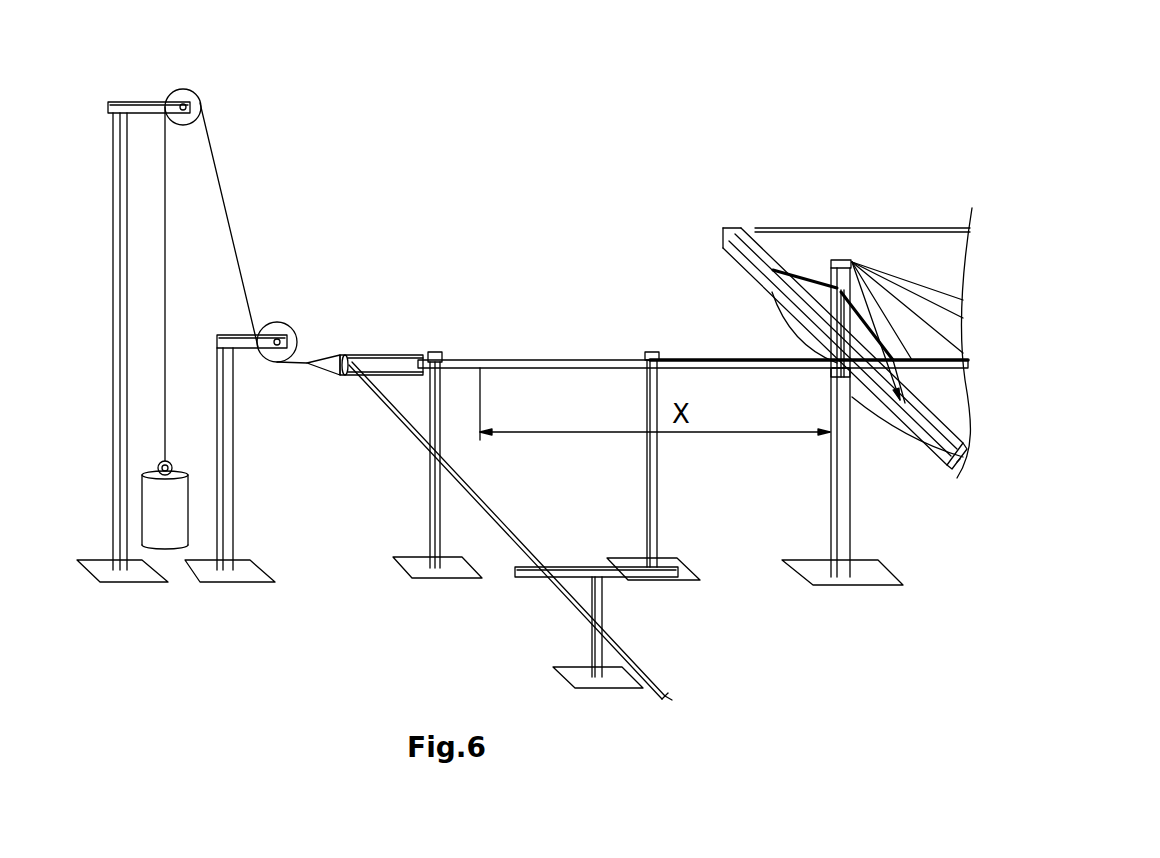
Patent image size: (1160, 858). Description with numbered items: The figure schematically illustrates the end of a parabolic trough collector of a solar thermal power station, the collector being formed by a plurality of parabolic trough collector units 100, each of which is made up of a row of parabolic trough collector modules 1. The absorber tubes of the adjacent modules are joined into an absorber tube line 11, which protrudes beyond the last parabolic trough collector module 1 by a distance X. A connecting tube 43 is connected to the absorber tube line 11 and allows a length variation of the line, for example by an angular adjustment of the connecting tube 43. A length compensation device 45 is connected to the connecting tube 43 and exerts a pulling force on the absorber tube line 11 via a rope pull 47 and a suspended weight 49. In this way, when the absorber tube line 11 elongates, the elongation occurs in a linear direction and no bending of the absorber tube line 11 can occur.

The parabolic trough collector module 1 is at (757, 190).
The absorber tube line 11 is at (573, 365).
The connecting tube 43 is at (438, 335).
The length compensation device 45 is at (265, 158).
The rope pull 47 is at (230, 225).
The weight 49 is at (163, 513).
The parabolic trough collector unit 100 is at (883, 177).